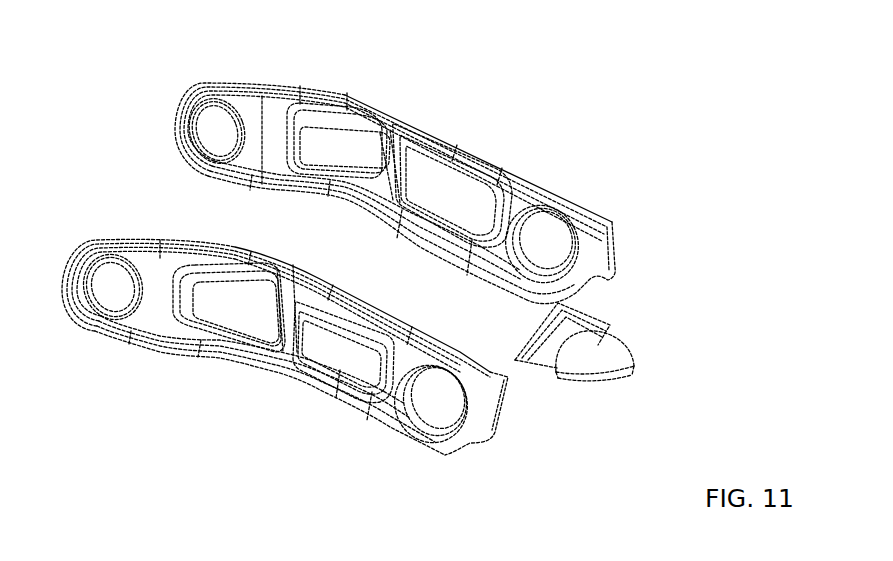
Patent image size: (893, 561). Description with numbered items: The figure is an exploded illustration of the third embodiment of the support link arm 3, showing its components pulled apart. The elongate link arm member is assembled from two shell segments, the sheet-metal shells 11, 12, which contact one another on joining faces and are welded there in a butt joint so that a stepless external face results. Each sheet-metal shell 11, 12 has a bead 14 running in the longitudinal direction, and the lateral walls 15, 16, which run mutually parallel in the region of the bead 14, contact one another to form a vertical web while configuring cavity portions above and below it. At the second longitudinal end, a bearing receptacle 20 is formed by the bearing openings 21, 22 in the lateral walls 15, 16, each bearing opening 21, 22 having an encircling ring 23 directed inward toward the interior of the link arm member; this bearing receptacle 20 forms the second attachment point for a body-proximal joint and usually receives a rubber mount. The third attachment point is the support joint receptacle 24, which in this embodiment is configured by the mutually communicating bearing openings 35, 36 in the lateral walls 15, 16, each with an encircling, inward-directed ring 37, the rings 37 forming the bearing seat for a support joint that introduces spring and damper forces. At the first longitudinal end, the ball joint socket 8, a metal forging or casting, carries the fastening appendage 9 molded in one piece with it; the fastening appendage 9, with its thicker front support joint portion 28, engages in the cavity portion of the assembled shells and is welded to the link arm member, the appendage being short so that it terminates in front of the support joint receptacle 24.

The support link arm 3 is at (627, 200).
The ball joint socket 8 is at (623, 342).
The fastening appendage 9 is at (587, 317).
The sheet-metal shell 11 is at (347, 290).
The sheet-metal shell 12 is at (446, 128).
The bead 14 is at (332, 363).
The lateral wall 15 is at (522, 185).
The lateral wall 16 is at (160, 333).
The bearing receptacle 20 is at (78, 322).
The bearing opening 21 is at (92, 277).
The bearing opening 22 is at (218, 113).
The encircling ring 23 is at (245, 122).
The support joint receptacle 24 is at (403, 423).
The front support joint portion 28 is at (220, 350).
The bearing opening 35 is at (440, 423).
The bearing opening 36 is at (558, 233).
The encircling, inward-directed ring 37 is at (546, 205).